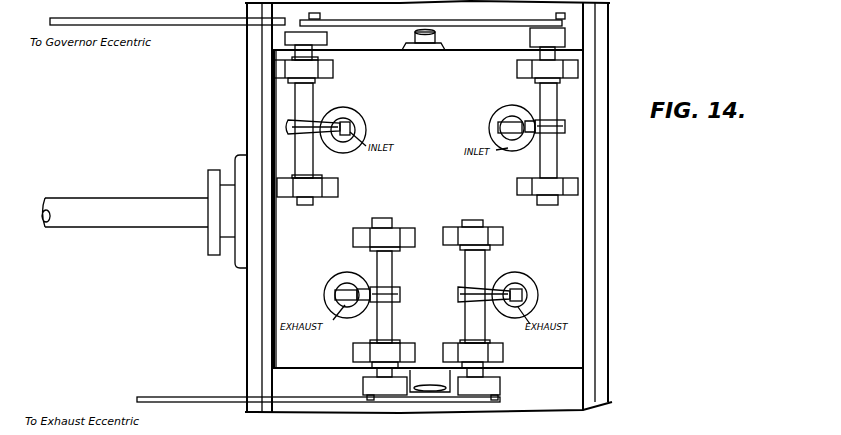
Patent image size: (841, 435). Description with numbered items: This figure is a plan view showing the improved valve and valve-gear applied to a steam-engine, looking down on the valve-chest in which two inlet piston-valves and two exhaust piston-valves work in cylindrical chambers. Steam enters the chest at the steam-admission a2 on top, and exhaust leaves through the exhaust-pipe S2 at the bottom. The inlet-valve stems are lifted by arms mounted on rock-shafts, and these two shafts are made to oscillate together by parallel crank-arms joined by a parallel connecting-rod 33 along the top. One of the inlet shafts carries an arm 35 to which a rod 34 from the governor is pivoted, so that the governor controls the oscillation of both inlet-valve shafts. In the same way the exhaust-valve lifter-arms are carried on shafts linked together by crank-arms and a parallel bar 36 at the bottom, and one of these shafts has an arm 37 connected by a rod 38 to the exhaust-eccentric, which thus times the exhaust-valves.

The parallel connecting-rod 33 is at (431, 15).
The rod 34 is at (167, 14).
The arm 35 is at (282, 36).
The parallel bar 36 is at (479, 392).
The arm 37 is at (376, 384).
The rod 38 is at (318, 391).
The steam-admission a2 is at (428, 40).
The exhaust-pipe S2 is at (432, 386).